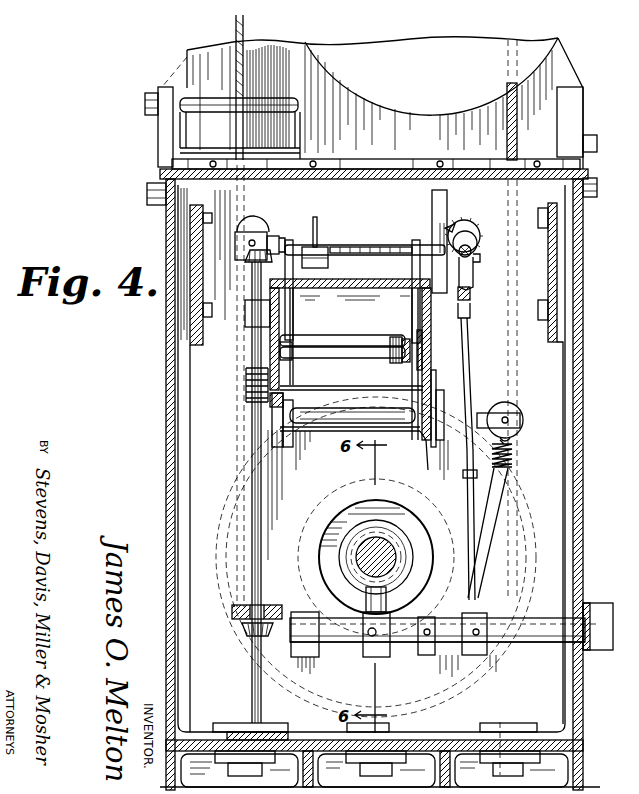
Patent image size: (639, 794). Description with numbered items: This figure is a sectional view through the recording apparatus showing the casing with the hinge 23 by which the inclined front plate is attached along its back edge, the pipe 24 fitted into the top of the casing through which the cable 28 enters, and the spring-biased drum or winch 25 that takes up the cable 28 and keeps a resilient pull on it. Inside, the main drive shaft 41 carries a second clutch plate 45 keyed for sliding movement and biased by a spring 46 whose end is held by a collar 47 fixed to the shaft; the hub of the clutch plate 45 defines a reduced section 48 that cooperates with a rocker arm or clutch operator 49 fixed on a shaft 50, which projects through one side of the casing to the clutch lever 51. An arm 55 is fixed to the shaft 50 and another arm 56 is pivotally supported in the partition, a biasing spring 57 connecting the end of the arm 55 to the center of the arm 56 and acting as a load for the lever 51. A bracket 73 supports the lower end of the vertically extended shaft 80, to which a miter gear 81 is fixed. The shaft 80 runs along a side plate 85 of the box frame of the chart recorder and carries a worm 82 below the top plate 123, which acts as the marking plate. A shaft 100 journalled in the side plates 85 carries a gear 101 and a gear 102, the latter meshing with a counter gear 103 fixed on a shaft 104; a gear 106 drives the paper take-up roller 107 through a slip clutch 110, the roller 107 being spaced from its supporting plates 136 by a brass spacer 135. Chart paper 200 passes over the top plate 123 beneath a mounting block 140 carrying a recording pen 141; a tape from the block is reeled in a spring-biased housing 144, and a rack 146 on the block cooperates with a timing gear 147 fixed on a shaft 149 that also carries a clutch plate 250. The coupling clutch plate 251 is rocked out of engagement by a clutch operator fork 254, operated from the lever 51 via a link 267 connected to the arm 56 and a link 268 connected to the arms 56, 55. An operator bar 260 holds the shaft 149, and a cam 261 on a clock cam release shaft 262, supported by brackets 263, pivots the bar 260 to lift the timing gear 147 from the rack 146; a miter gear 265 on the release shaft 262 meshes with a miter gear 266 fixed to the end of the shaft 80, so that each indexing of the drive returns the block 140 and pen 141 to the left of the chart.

The hinge 23 is at (362, 160).
The pipe 24 is at (283, 88).
The drum or winch 25 is at (440, 102).
The cable 28 is at (244, 32).
The main drive shaft 41 is at (396, 555).
The second clutch plate 45 is at (414, 522).
The spring 46 is at (303, 566).
The collar 47 is at (338, 530).
The reduced section 48 is at (369, 520).
The rocker arm or clutch operator 49 is at (367, 600).
The shaft 50 is at (530, 638).
The clutch lever 51 is at (598, 604).
The arm 55 is at (490, 616).
The arm 56 is at (522, 415).
The biasing spring 57 is at (514, 456).
The bracket 73 is at (233, 610).
The vertically extended shaft 80 is at (252, 490).
The miter gear 81 is at (246, 637).
The worm 82 is at (246, 385).
The side plate 85 is at (271, 325).
The shaft 100 is at (318, 356).
The gear 101 is at (395, 364).
The gear 102 is at (422, 340).
The counter gear 103 is at (415, 332).
The shaft 104 is at (322, 336).
The gear 106 is at (424, 446).
The paper take-up roller 107 is at (310, 433).
The slip clutch 110 is at (428, 432).
The top plate 123 is at (326, 292).
The brass spacer 135 is at (300, 414).
The plates 136 is at (437, 410).
The mounting block 140 is at (320, 249).
The recording pen 141 is at (317, 220).
The housing 144 is at (240, 230).
The rack 146 is at (347, 249).
The timing gear 147 is at (470, 228).
The shaft 149 is at (481, 258).
The chart paper 200 is at (360, 281).
The clutch plate 250 is at (475, 236).
The coupling clutch plate 251 is at (472, 250).
The clutch operator fork 254 is at (471, 282).
The operator bar 260 is at (459, 222).
The cam 261 is at (432, 234).
The clock cam release shaft 262 is at (352, 245).
The brackets 263 is at (291, 246).
The miter gear 265 is at (279, 240).
The miter gear 266 is at (246, 258).
The link 267 is at (472, 336).
The link 268 is at (466, 471).